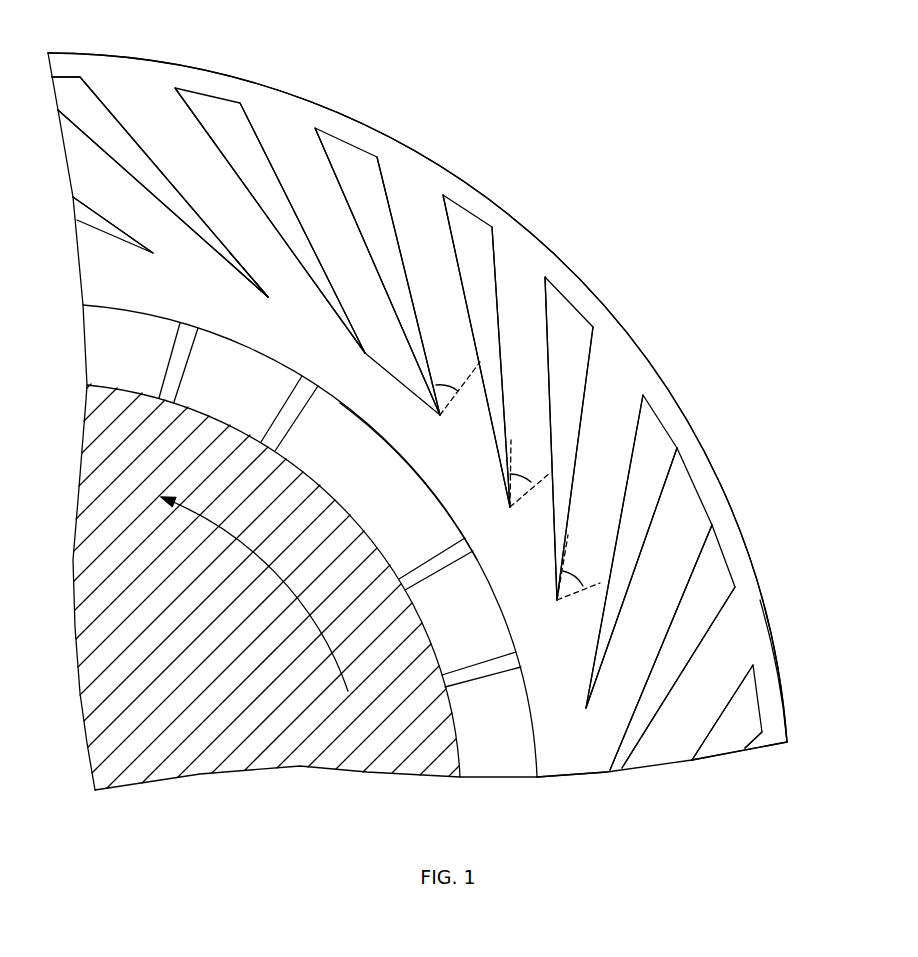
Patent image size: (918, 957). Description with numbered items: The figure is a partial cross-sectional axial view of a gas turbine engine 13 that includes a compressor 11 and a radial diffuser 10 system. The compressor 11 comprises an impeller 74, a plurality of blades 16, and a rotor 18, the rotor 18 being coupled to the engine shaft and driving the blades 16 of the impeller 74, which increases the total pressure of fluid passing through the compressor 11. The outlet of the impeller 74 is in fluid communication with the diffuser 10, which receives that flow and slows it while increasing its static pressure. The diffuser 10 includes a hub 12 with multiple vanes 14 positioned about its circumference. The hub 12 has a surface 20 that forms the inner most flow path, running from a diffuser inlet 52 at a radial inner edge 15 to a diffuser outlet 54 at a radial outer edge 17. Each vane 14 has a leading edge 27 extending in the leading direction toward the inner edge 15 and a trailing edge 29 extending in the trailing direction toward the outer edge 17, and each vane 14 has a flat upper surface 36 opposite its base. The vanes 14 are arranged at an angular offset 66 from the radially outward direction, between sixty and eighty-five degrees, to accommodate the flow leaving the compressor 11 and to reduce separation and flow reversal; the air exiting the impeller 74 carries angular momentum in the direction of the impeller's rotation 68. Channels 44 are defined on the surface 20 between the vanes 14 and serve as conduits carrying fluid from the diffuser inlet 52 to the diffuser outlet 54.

The radial diffuser 10 is at (407, 110).
The compressor 11 is at (253, 787).
The hub 12 is at (286, 92).
The gas turbine engine 13 is at (46, 516).
The vanes 14 is at (222, 132).
The radial inner edge 15 is at (432, 497).
The blades 16 is at (197, 336).
The radial outer edge 17 is at (787, 733).
The rotor 18 is at (88, 612).
The surface 20 is at (389, 419).
The leading edge 27 is at (270, 302).
The trailing edge 29 is at (60, 76).
The upper surface 36 is at (86, 126).
The channels 44 is at (114, 208).
The diffuser inlet 52 is at (598, 748).
The diffuser outlet 54 is at (697, 500).
The angular offset 66 is at (453, 390).
The rotation 68 is at (307, 487).
The impeller 74 is at (115, 341).